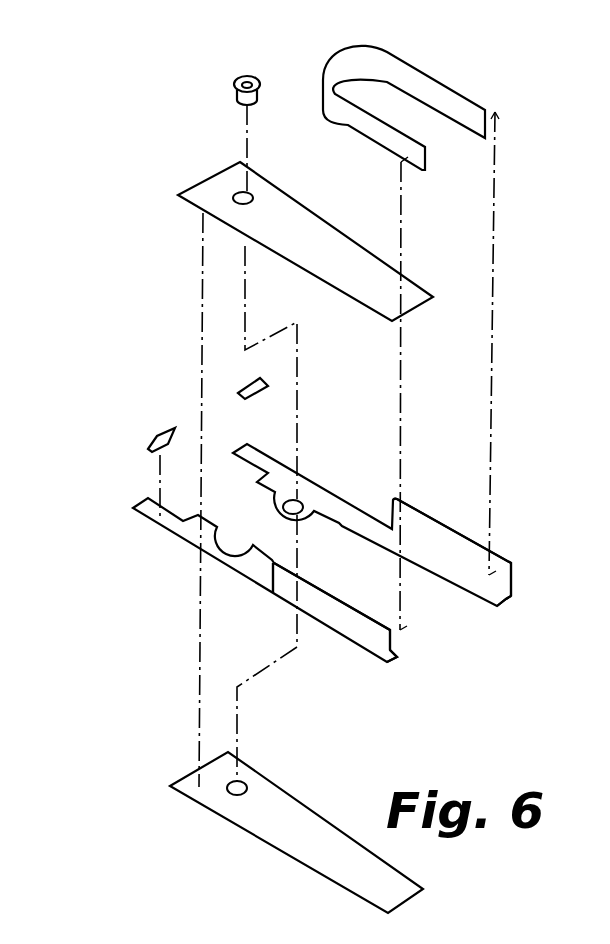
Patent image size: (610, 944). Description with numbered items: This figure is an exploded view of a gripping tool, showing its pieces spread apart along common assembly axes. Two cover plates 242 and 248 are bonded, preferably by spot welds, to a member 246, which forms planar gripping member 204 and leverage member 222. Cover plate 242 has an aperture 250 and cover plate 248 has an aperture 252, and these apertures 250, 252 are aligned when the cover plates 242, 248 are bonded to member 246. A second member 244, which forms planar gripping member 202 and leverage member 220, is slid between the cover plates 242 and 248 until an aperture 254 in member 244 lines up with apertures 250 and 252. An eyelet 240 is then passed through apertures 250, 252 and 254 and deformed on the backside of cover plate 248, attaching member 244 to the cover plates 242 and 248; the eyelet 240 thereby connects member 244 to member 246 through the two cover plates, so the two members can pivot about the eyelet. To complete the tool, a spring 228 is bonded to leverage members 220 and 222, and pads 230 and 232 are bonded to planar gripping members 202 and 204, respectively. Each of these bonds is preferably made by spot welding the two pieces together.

The planar gripping member 202 is at (406, 541).
The planar gripping member 204 is at (281, 598).
The leverage member 220 is at (504, 603).
The leverage member 222 is at (400, 658).
The spring 228 is at (444, 82).
The pad 230 is at (235, 391).
The pad 232 is at (145, 453).
The eyelet 240 is at (233, 80).
The cover plate 242 is at (190, 209).
The member 244 is at (500, 520).
The member 246 is at (264, 594).
The cover plate 248 is at (278, 852).
The aperture 250 is at (247, 193).
The aperture 252 is at (243, 784).
The aperture 254 is at (297, 500).